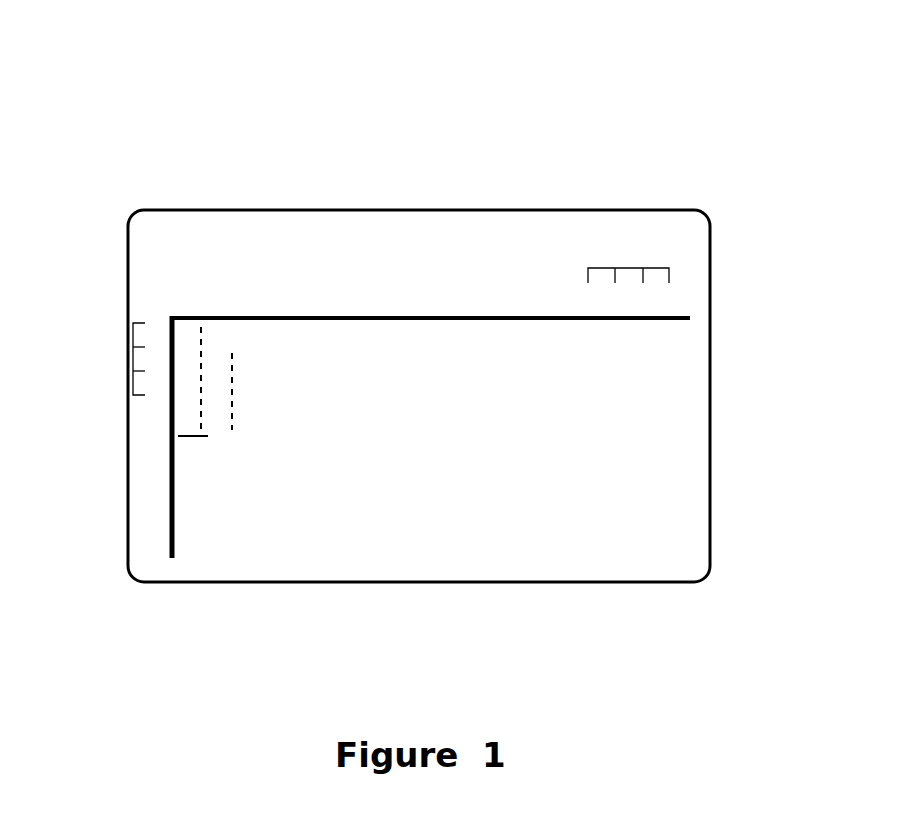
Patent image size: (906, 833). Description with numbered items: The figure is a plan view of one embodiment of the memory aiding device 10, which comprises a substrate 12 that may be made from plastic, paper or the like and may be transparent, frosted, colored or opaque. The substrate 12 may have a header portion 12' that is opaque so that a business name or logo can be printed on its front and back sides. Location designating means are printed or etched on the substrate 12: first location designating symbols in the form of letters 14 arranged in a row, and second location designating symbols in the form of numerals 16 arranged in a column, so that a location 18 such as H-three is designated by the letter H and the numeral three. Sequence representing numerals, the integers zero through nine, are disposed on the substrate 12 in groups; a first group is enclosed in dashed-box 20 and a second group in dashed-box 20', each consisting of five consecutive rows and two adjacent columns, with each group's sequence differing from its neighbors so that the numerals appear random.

The memory aiding device 10 is at (318, 102).
The substrate 12 is at (470, 396).
The header portion 12' is at (430, 342).
The letters 14 is at (632, 268).
The numerals 16 is at (128, 352).
The location 18 is at (375, 383).
The dashed-box 20 is at (132, 382).
The dashed-box 20' is at (119, 508).